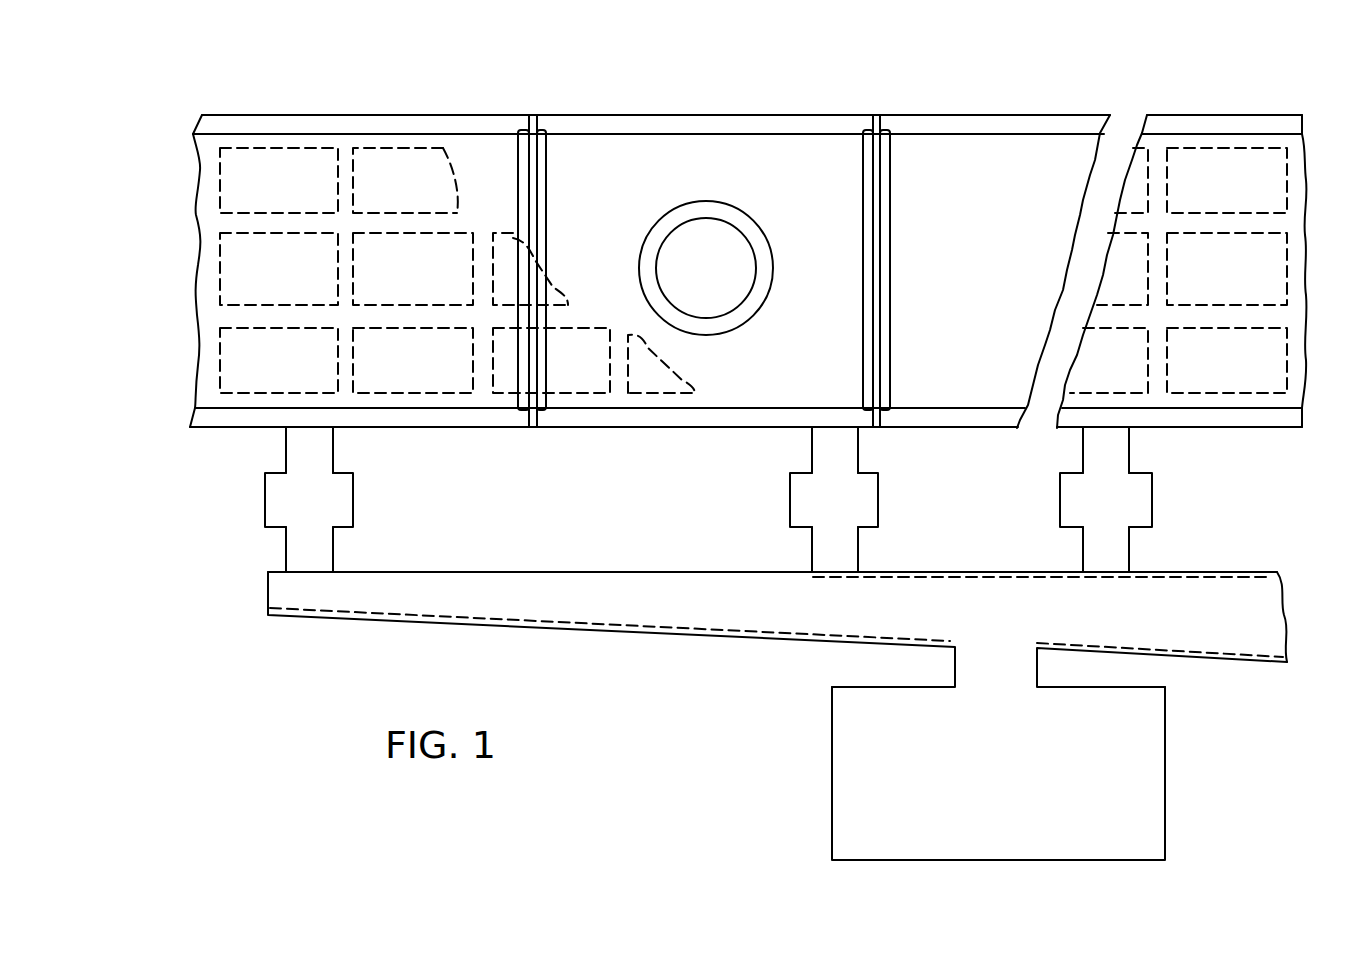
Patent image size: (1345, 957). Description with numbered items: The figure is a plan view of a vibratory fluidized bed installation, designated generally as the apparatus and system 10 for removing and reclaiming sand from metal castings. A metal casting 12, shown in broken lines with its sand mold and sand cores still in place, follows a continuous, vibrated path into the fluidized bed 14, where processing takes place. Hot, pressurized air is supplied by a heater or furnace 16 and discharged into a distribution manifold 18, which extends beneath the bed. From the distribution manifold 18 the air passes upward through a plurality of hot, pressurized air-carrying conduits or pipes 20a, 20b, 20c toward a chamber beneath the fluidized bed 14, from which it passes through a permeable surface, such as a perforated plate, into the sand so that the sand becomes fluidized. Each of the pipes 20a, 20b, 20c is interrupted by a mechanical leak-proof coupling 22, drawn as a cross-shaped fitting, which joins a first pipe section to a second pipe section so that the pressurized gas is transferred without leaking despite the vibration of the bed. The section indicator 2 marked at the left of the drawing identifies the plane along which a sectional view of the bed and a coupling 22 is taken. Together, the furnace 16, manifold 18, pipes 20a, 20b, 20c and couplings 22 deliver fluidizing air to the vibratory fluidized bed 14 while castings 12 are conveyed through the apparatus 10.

The apparatus and system for removing and reclaiming sand 10 is at (778, 86).
The metal casting 12 is at (278, 170).
The fluidized bed 14 is at (407, 227).
The heater or furnace 16 is at (857, 803).
The distribution manifold 18 is at (657, 610).
The hot pressurized air-carrying pipe 20a is at (333, 450).
The hot pressurized air-carrying pipe 20b is at (858, 450).
The hot pressurized air-carrying pipe 20c is at (1117, 450).
The leak-proof coupling 22 is at (353, 505).
The section line 2- 2 is at (268, 85).